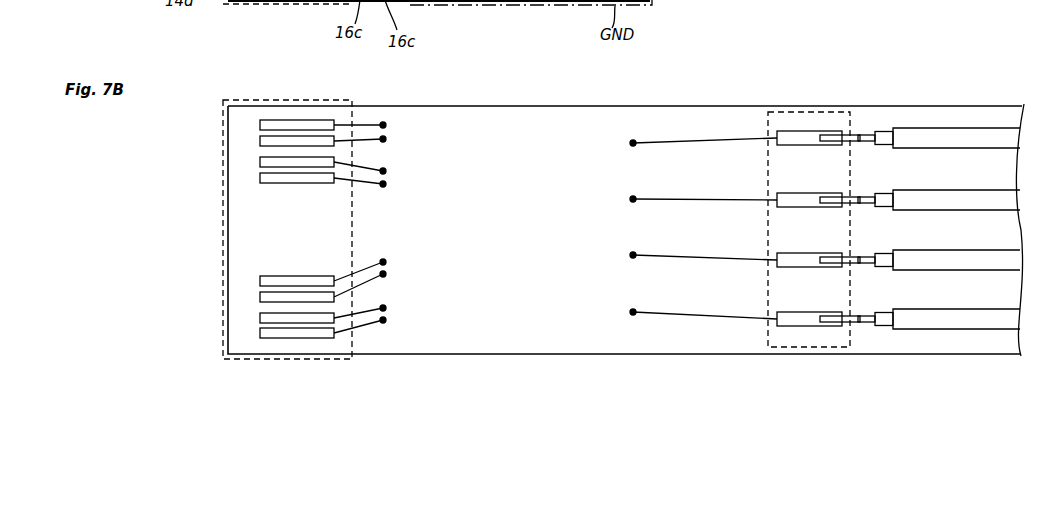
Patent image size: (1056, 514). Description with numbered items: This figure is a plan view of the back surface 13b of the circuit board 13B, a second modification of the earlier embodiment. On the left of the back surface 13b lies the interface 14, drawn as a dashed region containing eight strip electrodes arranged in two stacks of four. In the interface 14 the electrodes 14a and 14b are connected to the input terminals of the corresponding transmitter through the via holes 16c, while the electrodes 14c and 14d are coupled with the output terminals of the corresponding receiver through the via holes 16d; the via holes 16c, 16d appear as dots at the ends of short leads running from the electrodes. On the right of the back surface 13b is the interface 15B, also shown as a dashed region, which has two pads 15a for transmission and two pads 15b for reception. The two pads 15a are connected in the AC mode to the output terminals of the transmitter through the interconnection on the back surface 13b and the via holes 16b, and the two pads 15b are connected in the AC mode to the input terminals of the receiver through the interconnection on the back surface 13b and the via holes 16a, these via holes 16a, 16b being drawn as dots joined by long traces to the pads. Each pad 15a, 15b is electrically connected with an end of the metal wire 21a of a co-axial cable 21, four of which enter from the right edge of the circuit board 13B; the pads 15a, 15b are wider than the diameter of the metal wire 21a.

The circuit board 13B is at (707, 106).
The back surface 13b is at (576, 118).
The interface 14 is at (290, 100).
The electrode 14a is at (318, 125).
The electrode 14b is at (275, 142).
The electrode 14c is at (312, 281).
The electrode 14d is at (278, 297).
The interface 15B is at (812, 112).
The pad 15a is at (803, 267).
The pad 15b is at (803, 145).
The via hole 16a is at (626, 144).
The via hole 16b is at (626, 256).
The via hole 16c is at (383, 125).
The via hole 16d is at (383, 262).
The co-axial cable 21 is at (966, 136).
The metal wire 21a is at (828, 135).